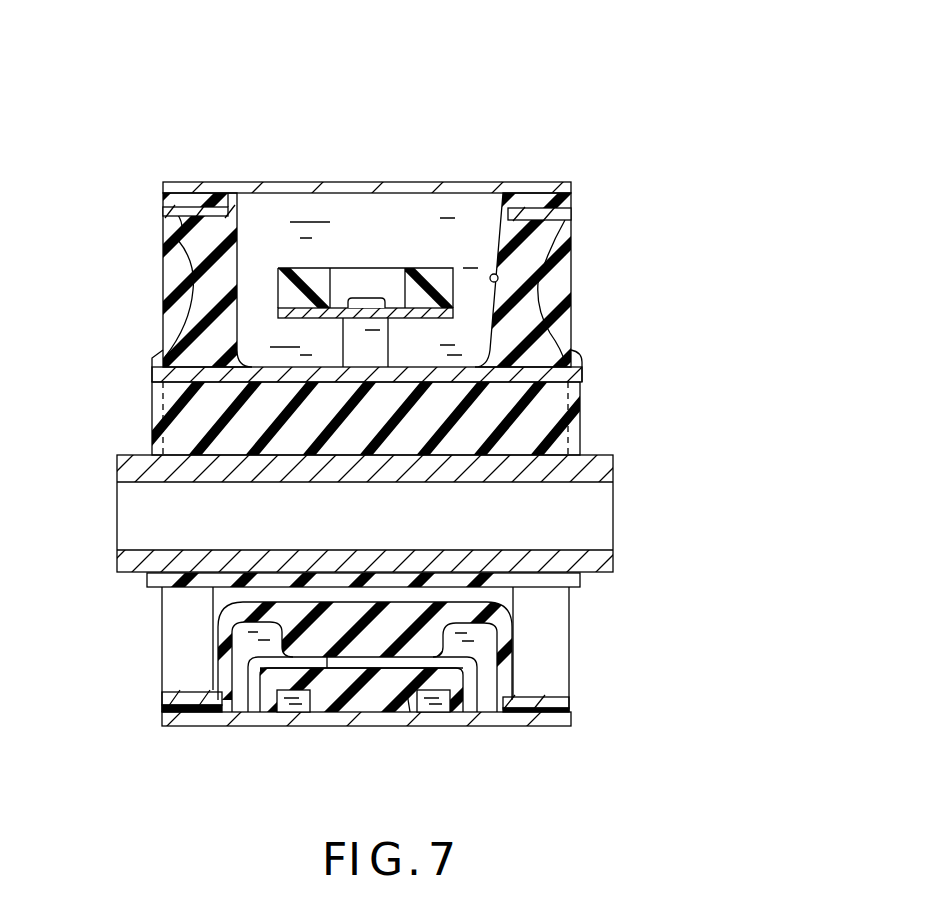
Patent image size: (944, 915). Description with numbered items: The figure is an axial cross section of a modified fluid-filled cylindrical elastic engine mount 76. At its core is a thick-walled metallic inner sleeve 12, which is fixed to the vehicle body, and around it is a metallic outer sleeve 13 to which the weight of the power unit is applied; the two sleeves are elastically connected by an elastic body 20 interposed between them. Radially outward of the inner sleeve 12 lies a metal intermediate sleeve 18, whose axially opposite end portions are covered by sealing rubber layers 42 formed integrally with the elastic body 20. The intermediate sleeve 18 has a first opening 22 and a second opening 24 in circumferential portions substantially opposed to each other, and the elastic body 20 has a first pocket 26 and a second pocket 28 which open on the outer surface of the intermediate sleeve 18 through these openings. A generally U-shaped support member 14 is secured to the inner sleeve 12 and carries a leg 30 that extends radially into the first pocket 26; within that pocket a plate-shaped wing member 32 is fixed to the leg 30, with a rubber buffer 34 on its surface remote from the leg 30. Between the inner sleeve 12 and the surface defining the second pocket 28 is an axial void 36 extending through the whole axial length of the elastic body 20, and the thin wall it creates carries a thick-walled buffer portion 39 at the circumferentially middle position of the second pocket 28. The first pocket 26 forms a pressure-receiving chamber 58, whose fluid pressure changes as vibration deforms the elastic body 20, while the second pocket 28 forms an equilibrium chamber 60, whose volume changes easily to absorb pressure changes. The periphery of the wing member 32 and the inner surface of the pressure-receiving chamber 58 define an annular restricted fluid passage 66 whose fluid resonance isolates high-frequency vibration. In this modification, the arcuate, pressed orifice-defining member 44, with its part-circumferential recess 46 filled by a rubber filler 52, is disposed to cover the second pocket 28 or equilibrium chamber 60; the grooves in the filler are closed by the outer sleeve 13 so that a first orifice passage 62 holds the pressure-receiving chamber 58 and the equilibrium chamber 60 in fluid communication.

The engine mount 76 is at (548, 84).
The outer sleeve 13 is at (345, 183).
The sealing rubber layers 42 is at (182, 206).
The first opening 22 is at (230, 212).
The intermediate sleeve 18 is at (538, 207).
The elastic body 20 is at (190, 242).
The rubber buffer 34 is at (283, 291).
The pressure-receiving chamber 58 is at (380, 249).
The first pocket 26 is at (498, 277).
The restricted fluid passage 66 is at (483, 300).
The support member 14 is at (558, 372).
The inner sleeve 12 is at (132, 460).
The leg 30 is at (352, 338).
The wing member 32 is at (420, 322).
The axial void 36 is at (282, 592).
The second pocket 28 is at (238, 648).
The equilibrium chamber 60 is at (487, 633).
The orifice-defining member 44 is at (475, 665).
The first orifice passage 62 is at (292, 712).
The thick-walled buffer portion 39 is at (327, 643).
The rubber filler 52 is at (368, 693).
The recess 46 is at (407, 695).
The second opening 24 is at (500, 707).